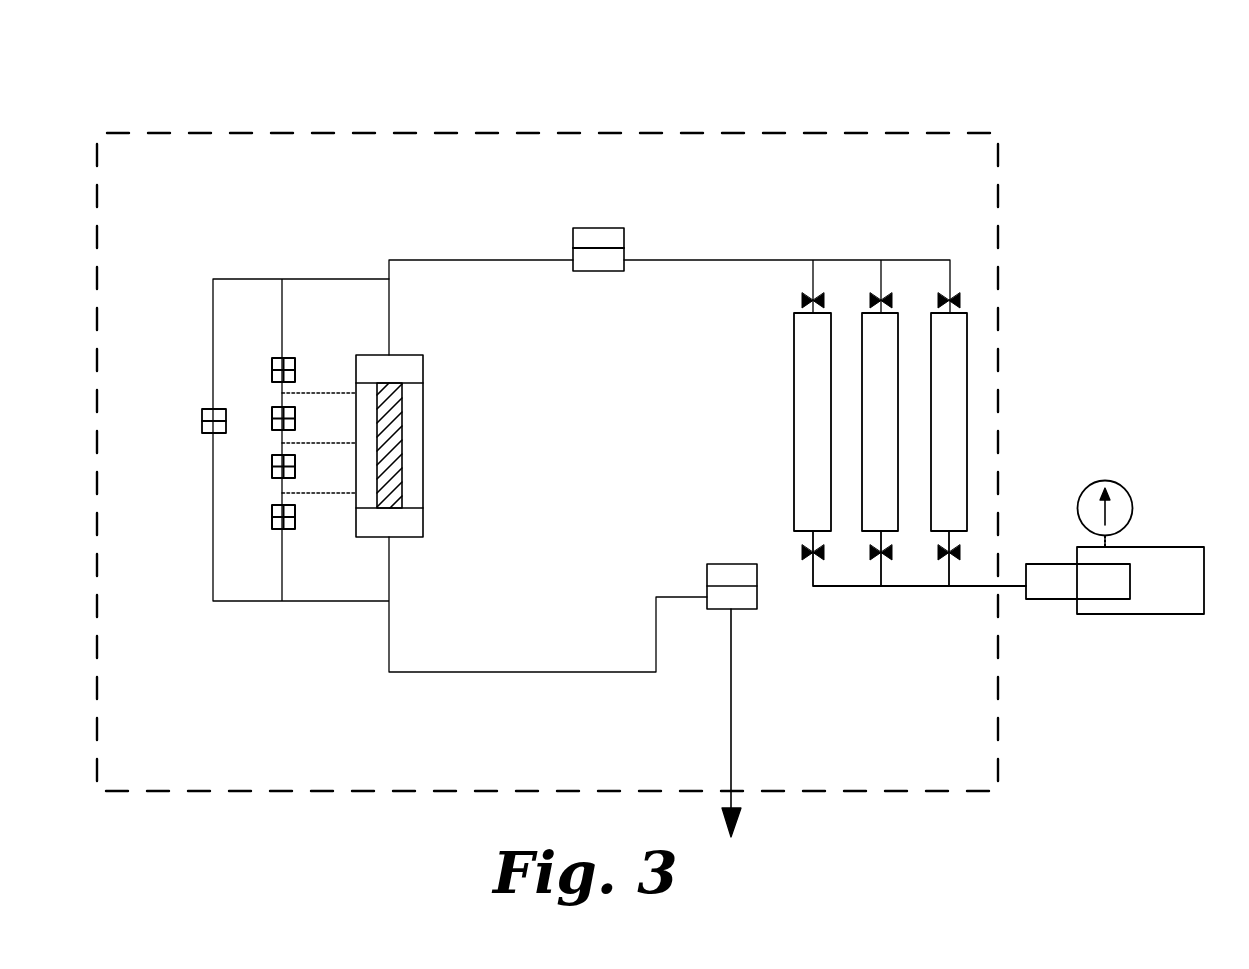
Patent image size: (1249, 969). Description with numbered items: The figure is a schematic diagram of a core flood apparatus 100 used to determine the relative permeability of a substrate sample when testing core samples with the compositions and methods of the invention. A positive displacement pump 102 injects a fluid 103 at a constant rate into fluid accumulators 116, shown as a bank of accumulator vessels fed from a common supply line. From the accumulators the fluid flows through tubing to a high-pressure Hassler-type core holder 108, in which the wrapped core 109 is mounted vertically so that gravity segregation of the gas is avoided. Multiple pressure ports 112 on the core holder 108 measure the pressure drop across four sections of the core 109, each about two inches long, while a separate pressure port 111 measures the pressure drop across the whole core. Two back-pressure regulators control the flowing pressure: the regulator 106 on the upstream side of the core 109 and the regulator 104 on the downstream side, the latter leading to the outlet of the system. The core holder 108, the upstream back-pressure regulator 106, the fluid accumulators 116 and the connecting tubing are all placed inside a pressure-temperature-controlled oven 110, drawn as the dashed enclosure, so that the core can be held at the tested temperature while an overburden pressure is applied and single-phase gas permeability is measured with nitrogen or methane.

The core flood apparatus 100 is at (957, 90).
The positive displacement pump 102 is at (1185, 555).
The fluid 103 is at (1009, 587).
The back-pressure regulator 104 is at (728, 562).
The back-pressure regulator 106 is at (605, 272).
The core holder 108 is at (424, 400).
The core 109 is at (396, 455).
The oven 110 is at (1001, 245).
The pressure port 111 is at (202, 415).
The pressure ports 112 is at (271, 414).
The fluid accumulators 116 is at (817, 432).